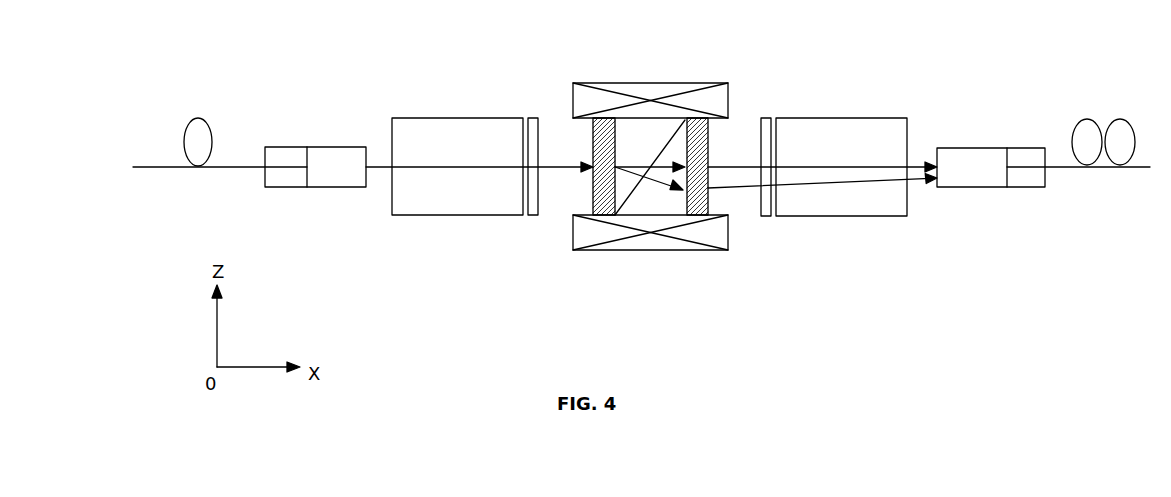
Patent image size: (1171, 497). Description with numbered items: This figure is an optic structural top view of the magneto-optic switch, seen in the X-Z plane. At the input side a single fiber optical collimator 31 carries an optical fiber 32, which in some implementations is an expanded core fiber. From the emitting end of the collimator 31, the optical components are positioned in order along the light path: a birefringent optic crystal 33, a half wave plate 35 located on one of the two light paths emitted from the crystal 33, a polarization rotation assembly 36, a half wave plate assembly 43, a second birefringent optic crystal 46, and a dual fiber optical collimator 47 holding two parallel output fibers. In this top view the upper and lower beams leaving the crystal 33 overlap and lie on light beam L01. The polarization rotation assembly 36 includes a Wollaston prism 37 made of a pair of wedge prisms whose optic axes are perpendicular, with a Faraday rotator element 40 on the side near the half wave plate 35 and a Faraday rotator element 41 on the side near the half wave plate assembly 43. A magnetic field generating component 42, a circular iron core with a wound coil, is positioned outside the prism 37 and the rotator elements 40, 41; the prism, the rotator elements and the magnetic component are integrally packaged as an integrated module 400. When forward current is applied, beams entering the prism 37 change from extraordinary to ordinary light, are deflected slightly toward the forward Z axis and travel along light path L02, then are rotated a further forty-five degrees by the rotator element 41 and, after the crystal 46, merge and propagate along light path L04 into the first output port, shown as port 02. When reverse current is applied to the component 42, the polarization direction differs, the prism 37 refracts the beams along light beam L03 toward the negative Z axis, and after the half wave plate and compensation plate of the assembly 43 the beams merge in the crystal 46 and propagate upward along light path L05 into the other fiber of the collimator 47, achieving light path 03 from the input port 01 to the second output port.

The integrated module 400 is at (312, 50).
The optical fiber 32 is at (170, 167).
The single fiber optical collimator 31 is at (343, 157).
The input port 01 is at (362, 167).
The birefringent optic crystal 33 is at (476, 125).
The light beam L01 is at (457, 168).
The half wave plate 35 is at (533, 212).
The polarization rotation assembly 36 is at (680, 48).
The Wollaston prism 37 is at (627, 145).
The Faraday rotator element 40 is at (603, 203).
The Faraday rotator element 41 is at (698, 152).
The magnetic field generating component 42 is at (667, 242).
The light path L02 is at (645, 163).
The light beam L03 is at (653, 178).
The half wave plate assembly 43 is at (768, 118).
The birefringent optic crystal 46 is at (885, 128).
The light path L04 is at (802, 167).
The light path L05 is at (838, 185).
The dual fiber optical collimator 47 is at (987, 155).
The first output port 02 is at (939, 164).
The light path 03 is at (940, 182).